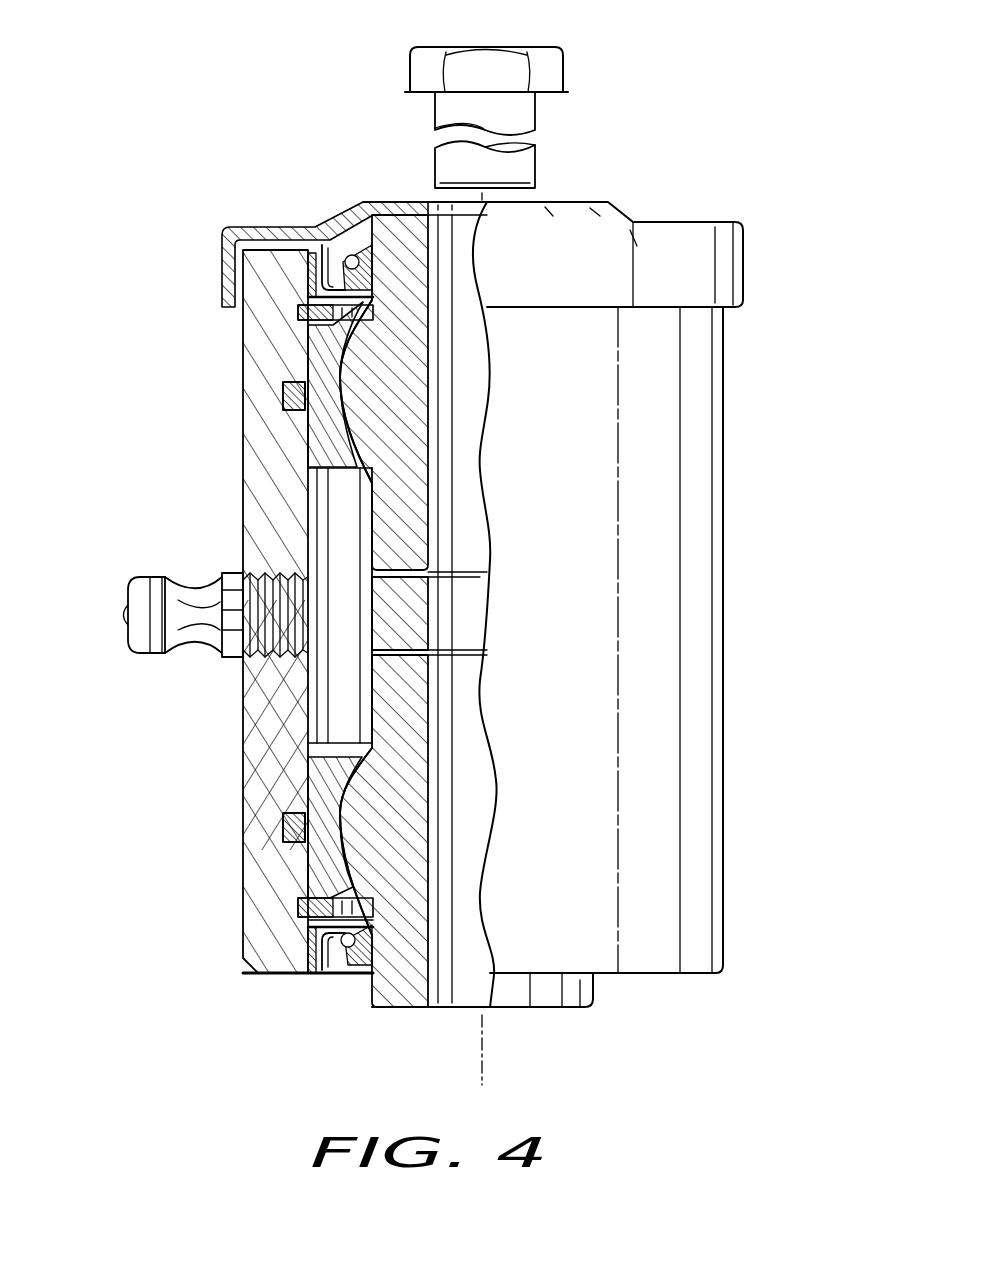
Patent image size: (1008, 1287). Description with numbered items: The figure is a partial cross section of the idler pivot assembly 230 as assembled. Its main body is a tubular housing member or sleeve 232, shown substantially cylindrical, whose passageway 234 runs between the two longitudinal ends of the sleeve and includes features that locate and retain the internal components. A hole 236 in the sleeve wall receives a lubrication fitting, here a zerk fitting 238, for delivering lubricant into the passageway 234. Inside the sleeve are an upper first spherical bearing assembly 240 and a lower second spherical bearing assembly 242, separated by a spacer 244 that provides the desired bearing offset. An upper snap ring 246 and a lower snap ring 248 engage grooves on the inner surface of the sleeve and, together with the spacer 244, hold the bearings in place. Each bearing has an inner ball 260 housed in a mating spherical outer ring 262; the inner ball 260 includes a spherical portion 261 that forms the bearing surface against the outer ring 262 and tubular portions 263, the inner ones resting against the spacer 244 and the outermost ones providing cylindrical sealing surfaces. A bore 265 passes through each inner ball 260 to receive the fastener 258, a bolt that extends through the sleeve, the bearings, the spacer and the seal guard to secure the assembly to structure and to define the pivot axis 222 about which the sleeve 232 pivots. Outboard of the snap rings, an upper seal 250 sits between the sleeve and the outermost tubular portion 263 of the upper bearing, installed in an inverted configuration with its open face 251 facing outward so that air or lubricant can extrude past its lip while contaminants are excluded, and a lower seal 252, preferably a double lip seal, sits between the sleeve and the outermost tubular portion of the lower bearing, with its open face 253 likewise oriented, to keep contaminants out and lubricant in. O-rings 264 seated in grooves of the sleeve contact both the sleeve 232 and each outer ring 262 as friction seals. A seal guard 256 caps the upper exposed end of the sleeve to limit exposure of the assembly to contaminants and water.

The pivot axis 222 is at (482, 1057).
The idler pivot assembly 230 is at (727, 428).
The sleeve 232 is at (725, 975).
The passageway 234 is at (343, 500).
The hole 236 is at (243, 655).
The zerk fitting 238 is at (152, 585).
The first spherical bearing assembly 240 is at (306, 463).
The second spherical bearing assembly 242 is at (300, 782).
The spacer 244 is at (372, 613).
The upper snap ring 246 is at (298, 313).
The lower snap ring 248 is at (238, 980).
The upper seal 250 is at (278, 211).
The open face 251 is at (327, 262).
The lower seal 252 is at (333, 975).
The open face 253 is at (303, 947).
The seal guard 256 is at (222, 240).
The fastener 258 is at (535, 160).
The inner ball 260 is at (308, 352).
The spherical portion 261 is at (380, 433).
The outer ring 262 is at (308, 438).
The tubular portion 263 is at (465, 611).
The O-ring 264 is at (283, 397).
The bore 265 is at (450, 520).